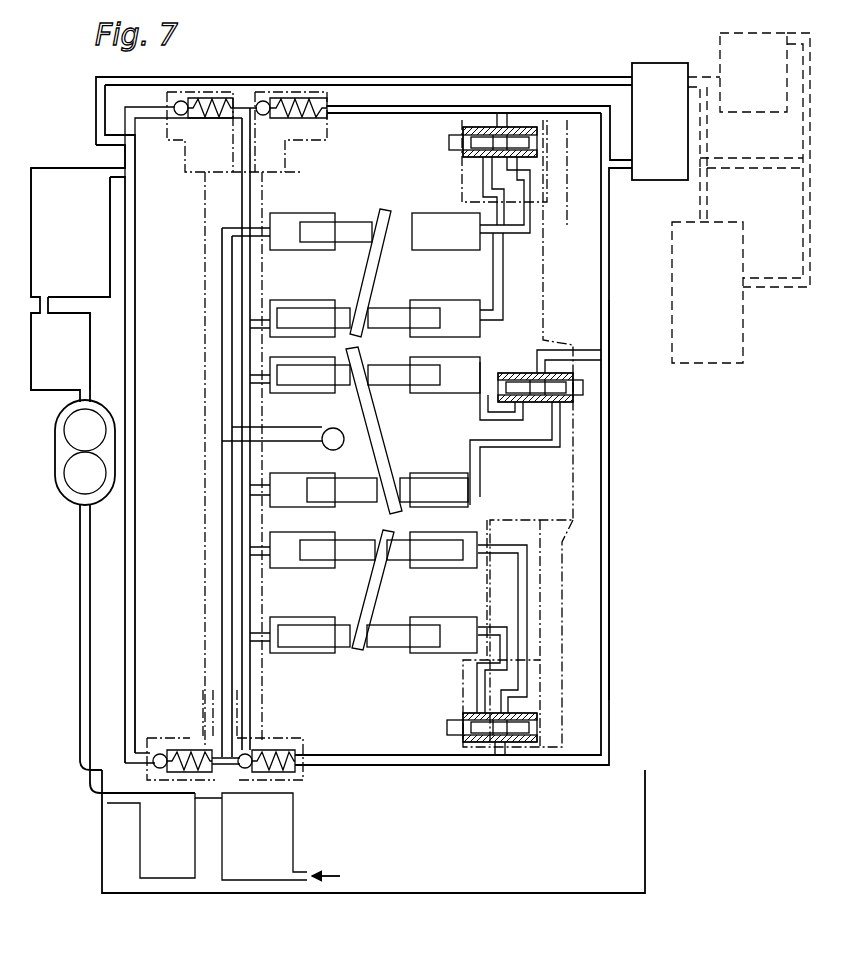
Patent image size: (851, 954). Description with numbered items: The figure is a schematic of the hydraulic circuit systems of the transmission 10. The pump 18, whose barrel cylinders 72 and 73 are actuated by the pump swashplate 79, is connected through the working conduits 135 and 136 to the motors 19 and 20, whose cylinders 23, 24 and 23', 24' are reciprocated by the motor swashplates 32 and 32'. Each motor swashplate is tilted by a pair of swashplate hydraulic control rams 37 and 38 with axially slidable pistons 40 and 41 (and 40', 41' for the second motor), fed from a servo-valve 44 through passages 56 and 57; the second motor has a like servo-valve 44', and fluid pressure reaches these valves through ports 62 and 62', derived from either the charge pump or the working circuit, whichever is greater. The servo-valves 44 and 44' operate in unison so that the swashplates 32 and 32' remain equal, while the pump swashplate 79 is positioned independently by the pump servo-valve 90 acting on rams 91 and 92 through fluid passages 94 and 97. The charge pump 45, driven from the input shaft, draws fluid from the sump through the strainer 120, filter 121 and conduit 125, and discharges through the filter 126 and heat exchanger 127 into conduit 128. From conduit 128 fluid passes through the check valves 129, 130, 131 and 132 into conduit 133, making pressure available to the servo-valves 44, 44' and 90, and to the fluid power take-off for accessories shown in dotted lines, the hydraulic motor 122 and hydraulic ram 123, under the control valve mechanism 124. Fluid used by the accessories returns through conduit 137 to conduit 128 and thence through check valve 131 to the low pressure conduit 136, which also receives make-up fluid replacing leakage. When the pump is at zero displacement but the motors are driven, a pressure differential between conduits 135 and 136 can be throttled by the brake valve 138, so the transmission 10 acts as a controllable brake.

The transmission 10 is at (365, 68).
The pump 18 is at (378, 362).
The motor 19 is at (410, 222).
The motor 20 is at (400, 532).
The cylinder 23 is at (310, 216).
The cylinder 23' is at (322, 564).
The cylinder 24 is at (310, 305).
The cylinder 24' is at (310, 654).
The swashplate 32 is at (358, 273).
The swashplate 32' is at (345, 592).
The swashplate hydraulic control ram 37 is at (436, 207).
The swashplate hydraulic control ram 38 is at (444, 302).
The piston 40 is at (360, 249).
The piston 40' is at (432, 562).
The piston 41 is at (404, 300).
The piston 41' is at (422, 648).
The servo-valve 44 is at (431, 148).
The servo-valve 44' is at (426, 735).
The charge pump 45 is at (60, 485).
The passage 56 is at (508, 172).
The passage 57 is at (512, 185).
The port 62 is at (517, 416).
The port 62' is at (499, 671).
The cylinder 72 is at (308, 372).
The cylinder 73 is at (360, 490).
The swashplate 79 is at (378, 445).
The pump servo-valve 90 is at (582, 397).
The hydraulic ram 91 is at (415, 375).
The hydraulic ram 92 is at (424, 492).
The fluid passage 94 is at (530, 428).
The passage 97 is at (498, 438).
The strainer 120 is at (373, 831).
The filter 121 is at (151, 838).
The hydraulic motor 122 is at (749, 160).
The hydraulic ram 123 is at (707, 292).
The control valve mechanism 124 is at (660, 121).
The conduit 125 is at (80, 662).
The filter 126 is at (60, 351).
The heat exchanger 127 is at (78, 232).
The conduit 128 is at (135, 430).
The check valve 129 is at (215, 100).
The check valve 130 is at (285, 100).
The check valve 131 is at (177, 748).
The check valve 132 is at (268, 748).
The conduit 133 is at (612, 600).
The conduit 135 is at (255, 203).
The low pressure conduit 136 is at (220, 457).
The conduit 137 is at (478, 80).
The brake valve 138 is at (343, 428).